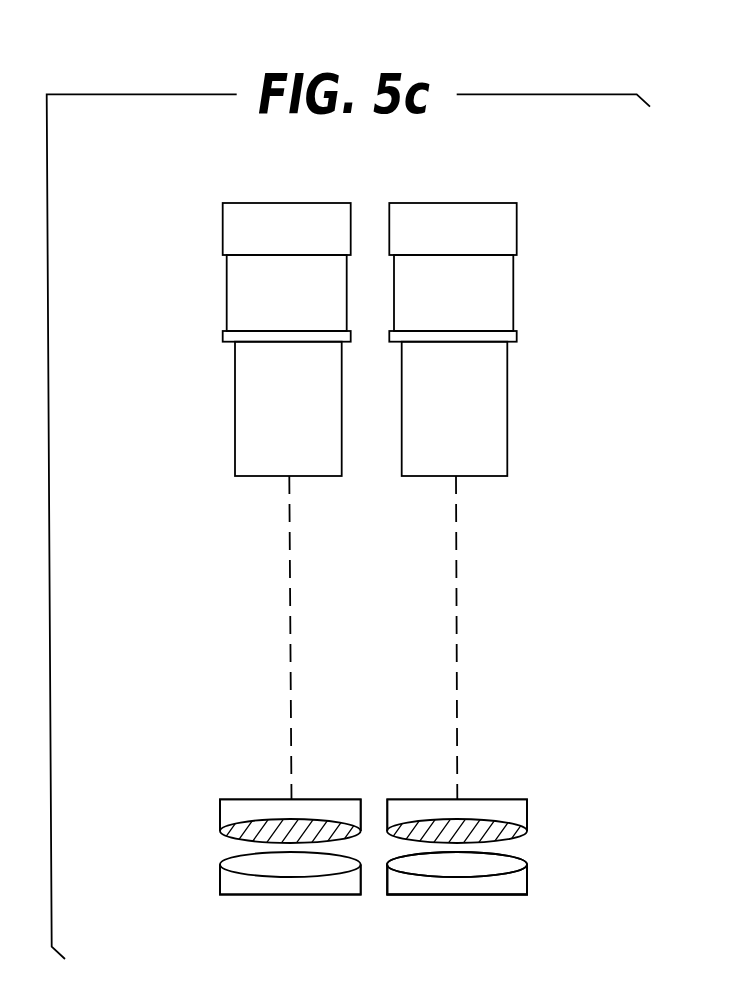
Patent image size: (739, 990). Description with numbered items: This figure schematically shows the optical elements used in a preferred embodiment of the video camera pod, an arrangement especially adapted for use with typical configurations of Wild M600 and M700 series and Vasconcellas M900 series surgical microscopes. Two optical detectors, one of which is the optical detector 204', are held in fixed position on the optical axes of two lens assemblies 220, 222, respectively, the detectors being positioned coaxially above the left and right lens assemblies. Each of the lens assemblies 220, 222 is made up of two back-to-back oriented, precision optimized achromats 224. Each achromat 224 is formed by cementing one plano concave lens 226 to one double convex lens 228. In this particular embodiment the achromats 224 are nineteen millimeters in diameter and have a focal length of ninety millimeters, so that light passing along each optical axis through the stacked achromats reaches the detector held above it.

The optical detector 204' is at (253, 339).
The lens assembly 220 is at (183, 797).
The lens assembly 222 is at (560, 797).
The achromat 224 is at (254, 799).
The plano concave lens 226 is at (437, 887).
The double convex lens 228 is at (497, 865).